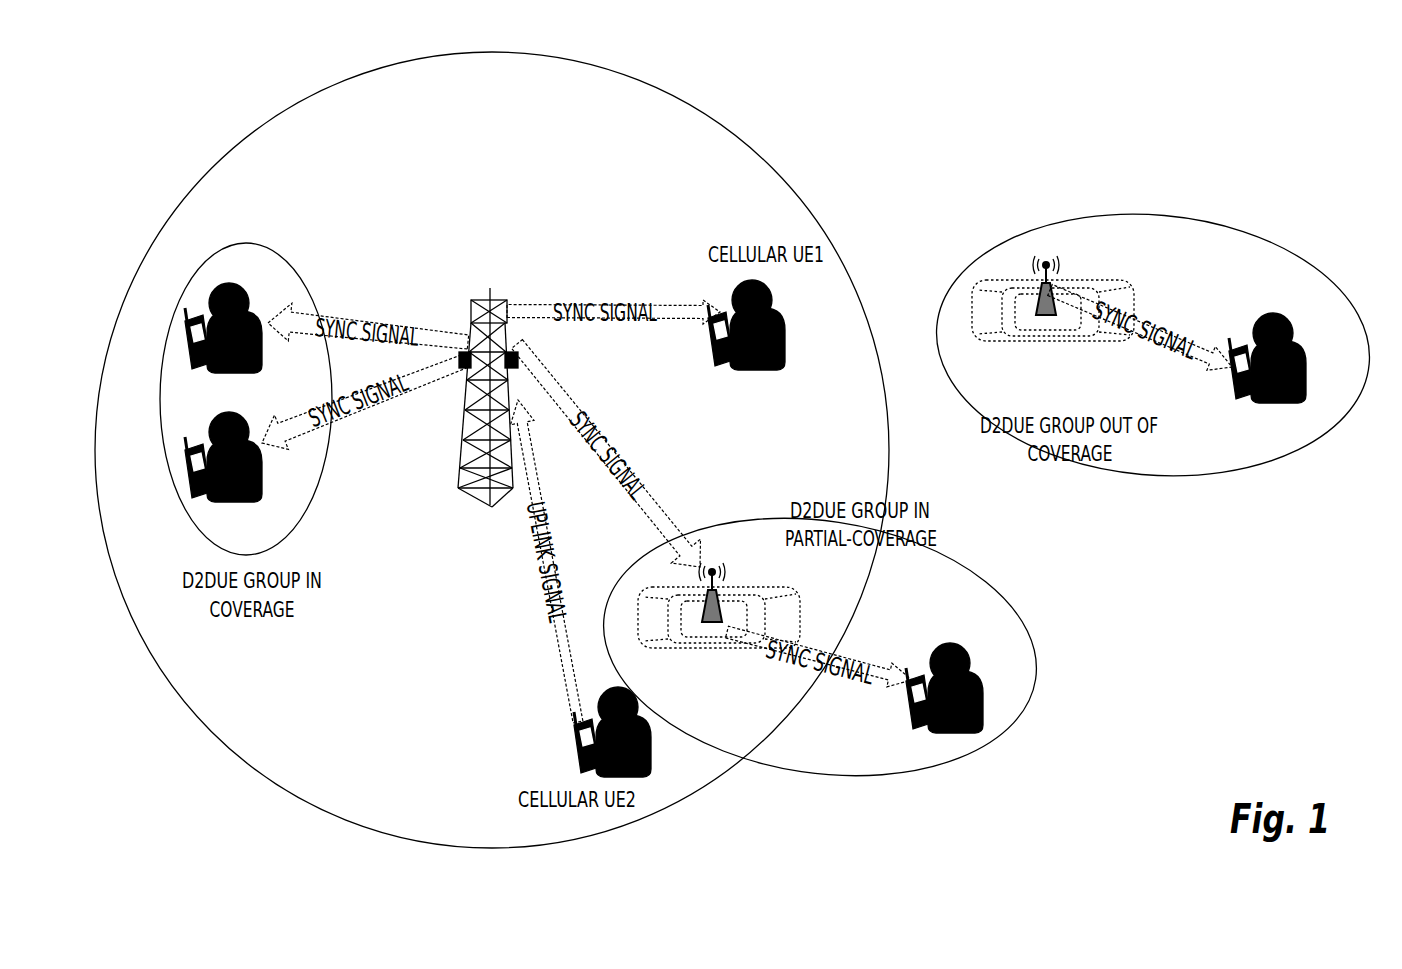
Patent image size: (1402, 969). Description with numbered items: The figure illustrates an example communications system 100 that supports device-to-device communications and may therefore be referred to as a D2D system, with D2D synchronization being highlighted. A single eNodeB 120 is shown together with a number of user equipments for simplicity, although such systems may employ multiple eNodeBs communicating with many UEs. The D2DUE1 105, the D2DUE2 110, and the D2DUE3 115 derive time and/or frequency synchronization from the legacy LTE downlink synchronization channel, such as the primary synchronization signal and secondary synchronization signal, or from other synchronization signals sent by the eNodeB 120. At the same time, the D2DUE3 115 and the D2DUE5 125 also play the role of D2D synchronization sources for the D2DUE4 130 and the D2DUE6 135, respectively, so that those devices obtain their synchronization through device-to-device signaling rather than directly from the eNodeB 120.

The communications system 100 is at (1251, 86).
The D2DUE1 105 is at (265, 313).
The D2DUE2 110 is at (274, 469).
The D2DUE3 115 is at (719, 624).
The eNodeB 120 is at (479, 383).
The D2DUE5 125 is at (1022, 296).
The D2DUE4 130 is at (967, 706).
The D2DUE6 135 is at (1286, 377).